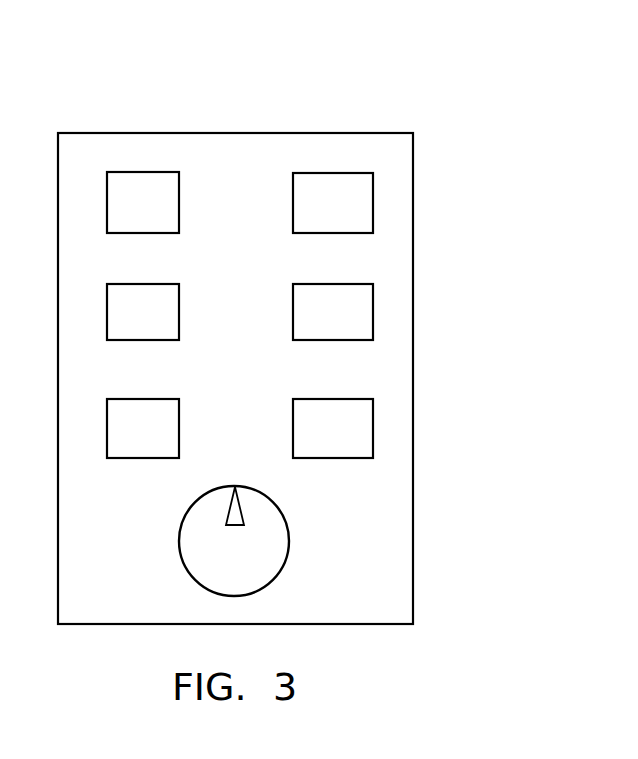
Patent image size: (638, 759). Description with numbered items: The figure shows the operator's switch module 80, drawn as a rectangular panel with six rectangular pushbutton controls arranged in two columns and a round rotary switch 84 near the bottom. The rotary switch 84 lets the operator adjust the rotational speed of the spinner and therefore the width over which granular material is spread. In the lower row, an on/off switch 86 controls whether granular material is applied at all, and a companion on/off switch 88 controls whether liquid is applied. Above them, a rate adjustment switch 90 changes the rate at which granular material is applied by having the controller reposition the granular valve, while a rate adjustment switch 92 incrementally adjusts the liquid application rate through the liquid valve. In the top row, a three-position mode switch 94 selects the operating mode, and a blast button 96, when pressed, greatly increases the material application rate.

The switch module 80 is at (356, 107).
The rotary switch 84 is at (289, 538).
The on/off switch 86 is at (337, 458).
The on/off switch 88 is at (129, 458).
The rate adjustment switch 90 is at (337, 340).
The rate adjustment switch 92 is at (129, 340).
The three-position mode switch 94 is at (338, 233).
The blast button 96 is at (143, 233).